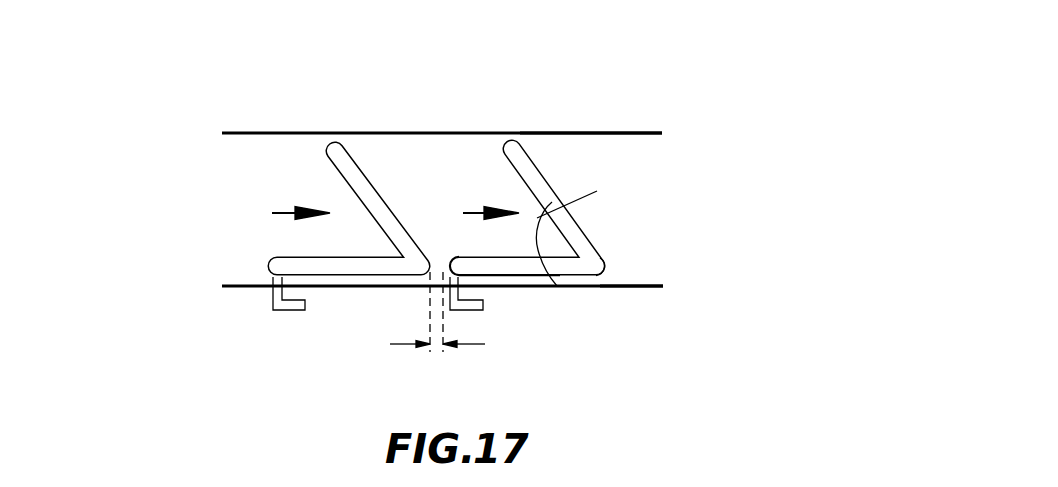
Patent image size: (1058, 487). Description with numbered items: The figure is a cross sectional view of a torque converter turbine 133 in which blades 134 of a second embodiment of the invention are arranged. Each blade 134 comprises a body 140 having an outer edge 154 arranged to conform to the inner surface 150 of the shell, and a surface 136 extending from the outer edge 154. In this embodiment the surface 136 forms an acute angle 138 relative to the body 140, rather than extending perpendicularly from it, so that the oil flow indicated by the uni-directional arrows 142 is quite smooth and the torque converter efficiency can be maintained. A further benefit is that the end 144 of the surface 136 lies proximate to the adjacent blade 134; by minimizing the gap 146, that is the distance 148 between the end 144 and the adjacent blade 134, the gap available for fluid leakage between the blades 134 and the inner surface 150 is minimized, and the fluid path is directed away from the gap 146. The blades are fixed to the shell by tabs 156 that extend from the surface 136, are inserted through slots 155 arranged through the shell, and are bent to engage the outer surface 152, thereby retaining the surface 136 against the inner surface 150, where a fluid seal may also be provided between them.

The flow channel assembly 133 is at (722, 83).
The blade 134 is at (533, 172).
The surface 136 is at (523, 272).
The acute angle 138 is at (572, 218).
The body 140 is at (569, 172).
The uni-directional arrows 142 is at (470, 213).
The end 144 is at (446, 237).
The gap 146 is at (428, 240).
The distance 148 is at (435, 353).
The inner surface 150 is at (646, 284).
The outer surface 152 is at (630, 287).
The outer edge 154 is at (617, 246).
The slots 155 is at (269, 297).
The tabs 156 is at (477, 309).